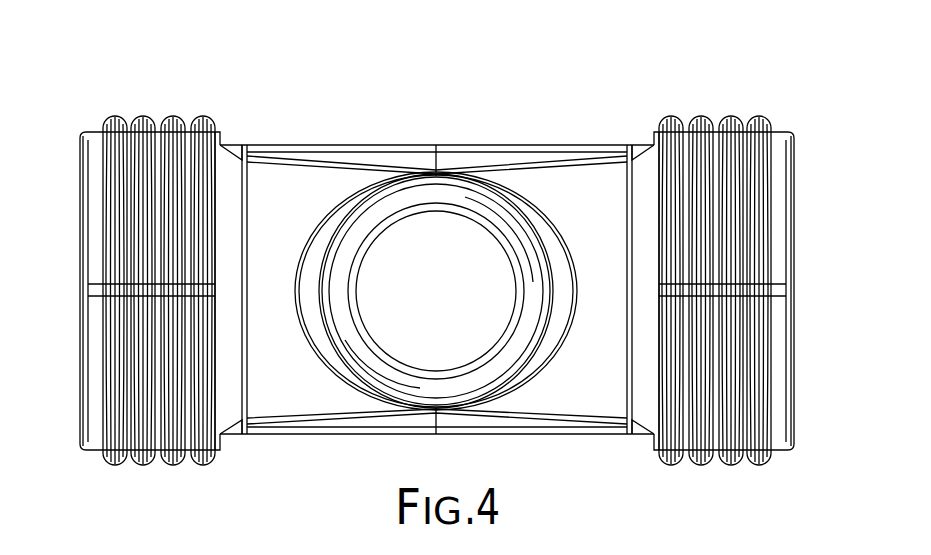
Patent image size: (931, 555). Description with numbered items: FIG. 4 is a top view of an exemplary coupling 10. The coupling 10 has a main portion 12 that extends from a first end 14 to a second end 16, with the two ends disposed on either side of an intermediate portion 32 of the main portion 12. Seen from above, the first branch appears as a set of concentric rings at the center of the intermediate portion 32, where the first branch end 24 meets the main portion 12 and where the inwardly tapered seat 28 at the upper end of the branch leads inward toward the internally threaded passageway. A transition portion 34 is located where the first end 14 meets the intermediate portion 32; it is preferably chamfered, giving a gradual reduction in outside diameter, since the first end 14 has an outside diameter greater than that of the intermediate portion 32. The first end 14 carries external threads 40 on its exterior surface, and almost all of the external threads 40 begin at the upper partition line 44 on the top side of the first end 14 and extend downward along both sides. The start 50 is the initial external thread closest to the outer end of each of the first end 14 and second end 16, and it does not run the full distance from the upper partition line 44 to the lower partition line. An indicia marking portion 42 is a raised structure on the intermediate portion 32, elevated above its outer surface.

The coupling 10 is at (760, 58).
The main portion 12 is at (300, 197).
The first end 14 is at (80, 178).
The second end 16 is at (797, 367).
The first branch end 24 is at (527, 373).
The inwardly tapered seat 28 is at (420, 197).
The intermediate portion 32 is at (578, 193).
The transition portion 34 is at (645, 183).
The external threads 40 is at (107, 118).
The indicia marking portion 42 is at (484, 157).
The upper partition line 44 is at (98, 290).
The start 50 is at (92, 303).